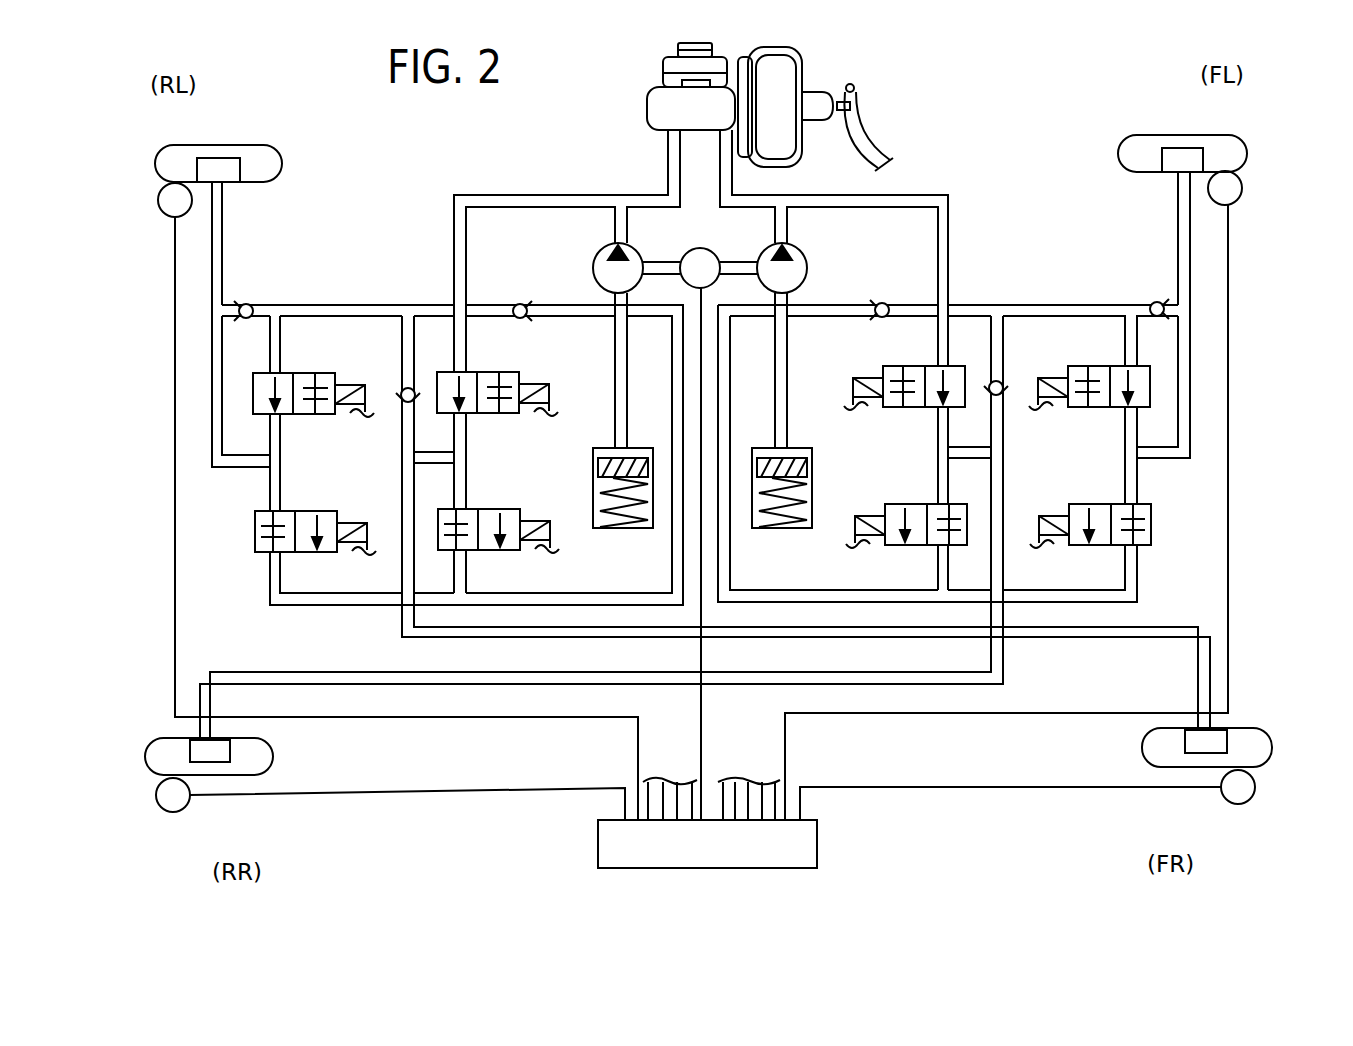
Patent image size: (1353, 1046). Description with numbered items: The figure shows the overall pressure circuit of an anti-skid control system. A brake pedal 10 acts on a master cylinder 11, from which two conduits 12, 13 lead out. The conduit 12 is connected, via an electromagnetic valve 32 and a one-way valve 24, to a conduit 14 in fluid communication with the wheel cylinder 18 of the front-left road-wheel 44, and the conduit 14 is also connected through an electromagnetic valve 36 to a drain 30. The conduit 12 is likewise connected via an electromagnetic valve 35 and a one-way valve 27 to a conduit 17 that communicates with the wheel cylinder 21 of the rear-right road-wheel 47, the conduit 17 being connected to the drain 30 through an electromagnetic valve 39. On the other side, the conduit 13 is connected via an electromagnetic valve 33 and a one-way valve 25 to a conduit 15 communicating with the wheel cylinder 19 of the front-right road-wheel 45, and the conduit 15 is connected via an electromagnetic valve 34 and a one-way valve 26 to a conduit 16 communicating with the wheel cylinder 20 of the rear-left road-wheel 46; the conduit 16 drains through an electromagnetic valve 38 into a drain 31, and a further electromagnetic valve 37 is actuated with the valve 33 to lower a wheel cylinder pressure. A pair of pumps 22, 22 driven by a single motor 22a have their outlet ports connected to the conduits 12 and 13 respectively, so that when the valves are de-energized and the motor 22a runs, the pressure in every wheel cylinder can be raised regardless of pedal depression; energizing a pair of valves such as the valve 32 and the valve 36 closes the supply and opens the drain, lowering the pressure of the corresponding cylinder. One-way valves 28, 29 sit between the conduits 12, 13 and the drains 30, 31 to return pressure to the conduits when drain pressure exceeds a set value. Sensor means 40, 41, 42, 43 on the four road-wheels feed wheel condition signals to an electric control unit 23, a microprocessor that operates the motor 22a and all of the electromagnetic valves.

The brake pedal 10 is at (866, 135).
The master cylinder 11 is at (780, 50).
The conduit 12 is at (950, 230).
The conduit 13 is at (533, 195).
The conduit 14 is at (1178, 215).
The conduit 15 is at (1110, 640).
The conduit 16 is at (224, 225).
The conduit 17 is at (245, 672).
The wheel cylinder 18 is at (1182, 148).
The wheel cylinder 19 is at (1200, 767).
The wheel cylinder 20 is at (216, 157).
The wheel cylinder 21 is at (215, 770).
The pump 22 is at (596, 257).
The motor 22a is at (698, 248).
The electric control unit 23 is at (820, 848).
The one-way valve 24 is at (1150, 300).
The one-way valve 25 is at (400, 388).
The one-way valve 26 is at (250, 305).
The one-way valve 27 is at (1003, 388).
The one-way valve 28 is at (884, 300).
The one-way valve 29 is at (513, 300).
The drain 30 is at (812, 505).
The drain 31 is at (593, 505).
The electromagnetic valve 32 is at (1100, 408).
The electromagnetic valve 33 is at (525, 382).
The electromagnetic valve 34 is at (305, 413).
The electromagnetic valve 35 is at (860, 372).
The electromagnetic valve 36 is at (1152, 525).
The electromagnetic valve 37 is at (470, 508).
The electromagnetic valve 38 is at (255, 530).
The electromagnetic valve 39 is at (920, 503).
The sensor means 40 is at (1230, 207).
The sensor means 41 is at (1238, 805).
The sensor means 42 is at (163, 213).
The sensor means 43 is at (175, 815).
The front-left road-wheel 44 is at (1247, 155).
The front-right road-wheel 45 is at (1272, 748).
The rear-left road-wheel 46 is at (275, 155).
The rear-right road-wheel 47 is at (273, 756).